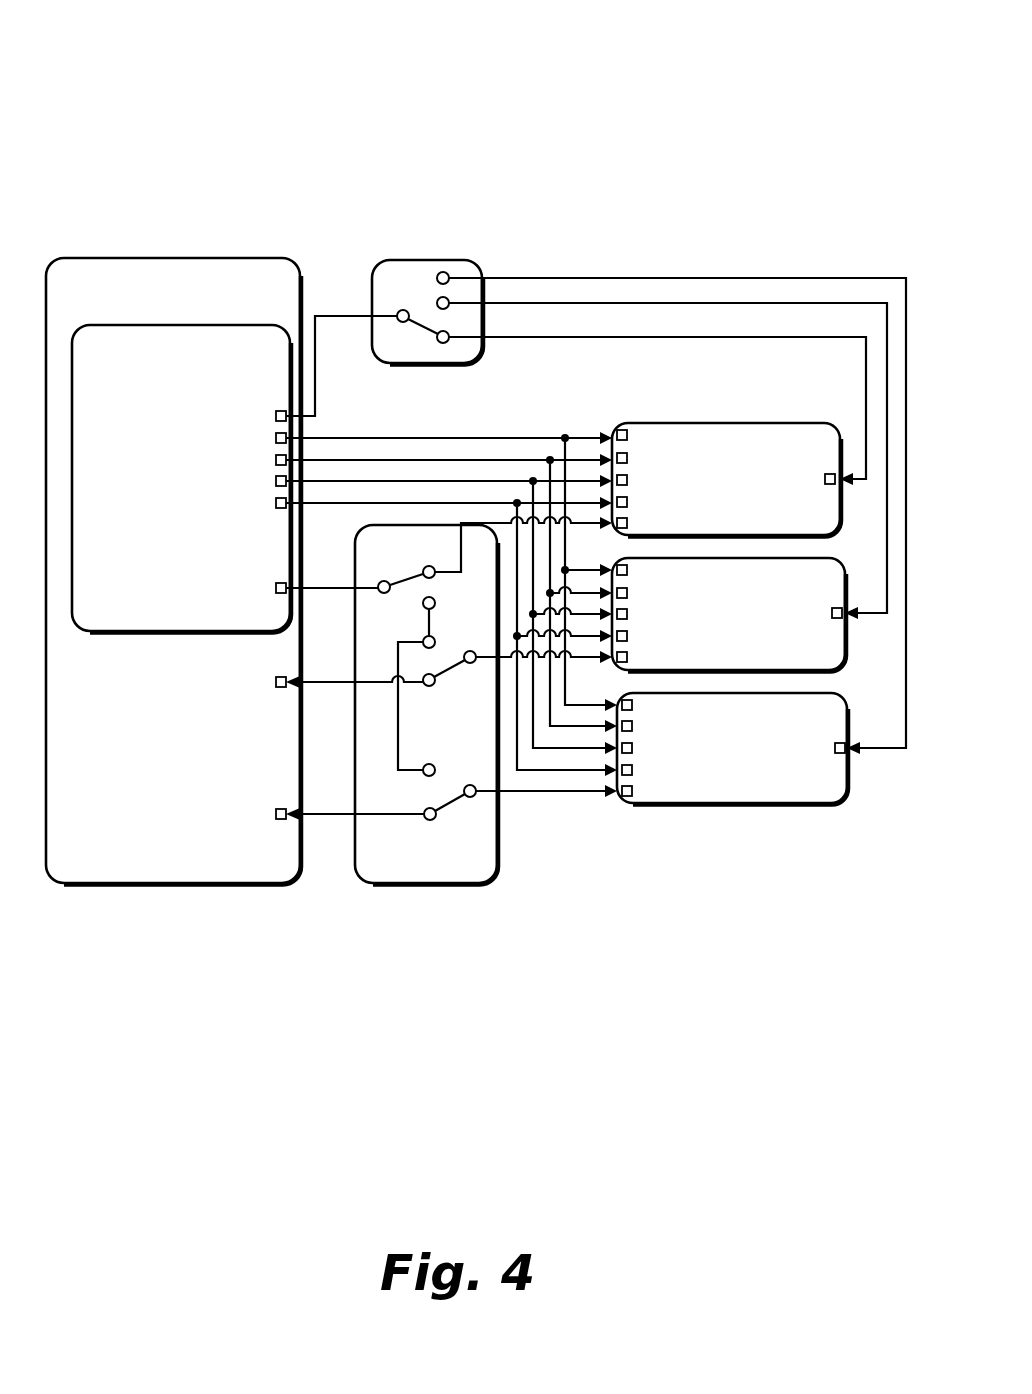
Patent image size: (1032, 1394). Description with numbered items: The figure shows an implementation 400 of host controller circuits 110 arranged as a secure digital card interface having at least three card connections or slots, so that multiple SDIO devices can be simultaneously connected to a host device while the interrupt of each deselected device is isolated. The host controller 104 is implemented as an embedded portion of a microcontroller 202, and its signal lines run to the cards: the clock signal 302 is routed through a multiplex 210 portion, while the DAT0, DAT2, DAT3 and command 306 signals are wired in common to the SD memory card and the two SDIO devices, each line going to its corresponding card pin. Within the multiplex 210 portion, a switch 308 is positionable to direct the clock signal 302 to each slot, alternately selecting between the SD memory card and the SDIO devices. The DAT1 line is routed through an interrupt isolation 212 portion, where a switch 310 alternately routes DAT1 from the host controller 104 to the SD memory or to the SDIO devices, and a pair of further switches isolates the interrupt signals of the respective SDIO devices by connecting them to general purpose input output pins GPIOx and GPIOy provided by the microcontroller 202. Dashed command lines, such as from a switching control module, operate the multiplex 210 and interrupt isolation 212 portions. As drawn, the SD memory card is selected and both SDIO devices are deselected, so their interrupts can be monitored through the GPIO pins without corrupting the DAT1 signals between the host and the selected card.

The implementation 400 is at (126, 40).
The circuits 110 is at (610, 212).
The microcontroller 202 is at (325, 571).
The host controller 104 is at (181, 479).
The clock (CLK) signal 302 is at (297, 371).
The command (CMD) signal 306 is at (399, 503).
The multiplex portion 210 is at (482, 262).
The switch 308 is at (421, 312).
The interrupt isolation portion 212 is at (497, 883).
The switch 310 is at (406, 581).